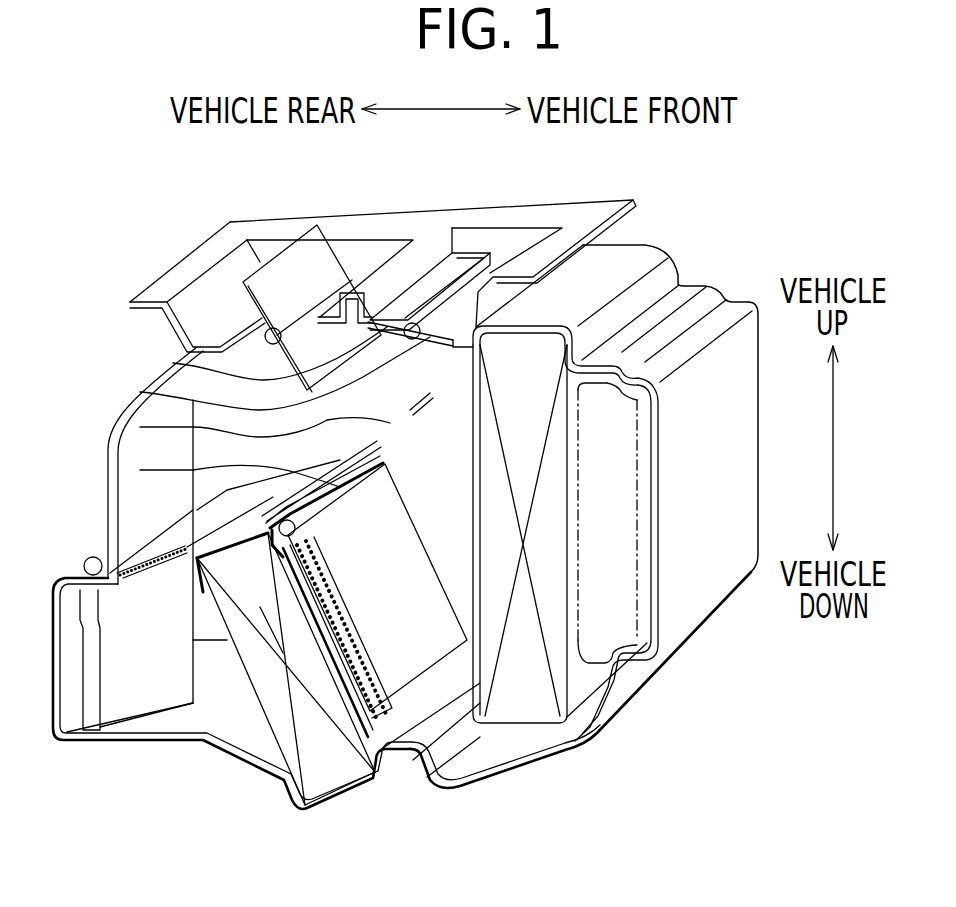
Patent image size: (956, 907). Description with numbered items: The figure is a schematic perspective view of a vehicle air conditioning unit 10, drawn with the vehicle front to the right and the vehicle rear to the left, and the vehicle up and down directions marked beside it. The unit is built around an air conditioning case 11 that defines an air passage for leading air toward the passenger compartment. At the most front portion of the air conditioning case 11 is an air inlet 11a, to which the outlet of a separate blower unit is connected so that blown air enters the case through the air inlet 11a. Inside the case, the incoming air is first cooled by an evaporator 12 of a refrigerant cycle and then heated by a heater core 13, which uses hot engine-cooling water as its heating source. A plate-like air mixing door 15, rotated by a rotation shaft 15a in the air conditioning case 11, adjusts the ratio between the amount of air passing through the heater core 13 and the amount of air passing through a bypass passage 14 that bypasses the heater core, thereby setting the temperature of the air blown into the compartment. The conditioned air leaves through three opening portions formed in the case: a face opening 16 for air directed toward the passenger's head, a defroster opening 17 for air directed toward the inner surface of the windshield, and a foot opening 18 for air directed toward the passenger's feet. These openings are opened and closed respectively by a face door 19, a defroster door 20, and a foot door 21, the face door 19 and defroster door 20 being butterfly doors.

The air conditioning unit 10 is at (703, 263).
The air conditioning case 11 is at (607, 260).
The air inlet 11a is at (637, 560).
The evaporator 12 is at (517, 693).
The heater core 13 is at (330, 757).
The bypass passage 14 is at (140, 427).
The air mixing door 15 is at (260, 656).
The rotation shaft 15a is at (140, 470).
The face opening 16 is at (367, 247).
The defroster opening 17 is at (520, 233).
The foot opening 18 is at (91, 565).
The face door 19 is at (173, 363).
The defroster door 20 is at (140, 392).
The foot door 21 is at (130, 677).